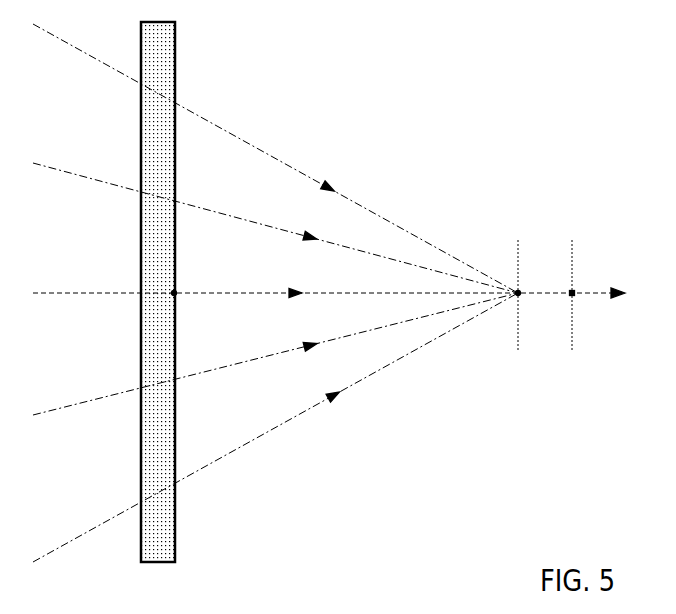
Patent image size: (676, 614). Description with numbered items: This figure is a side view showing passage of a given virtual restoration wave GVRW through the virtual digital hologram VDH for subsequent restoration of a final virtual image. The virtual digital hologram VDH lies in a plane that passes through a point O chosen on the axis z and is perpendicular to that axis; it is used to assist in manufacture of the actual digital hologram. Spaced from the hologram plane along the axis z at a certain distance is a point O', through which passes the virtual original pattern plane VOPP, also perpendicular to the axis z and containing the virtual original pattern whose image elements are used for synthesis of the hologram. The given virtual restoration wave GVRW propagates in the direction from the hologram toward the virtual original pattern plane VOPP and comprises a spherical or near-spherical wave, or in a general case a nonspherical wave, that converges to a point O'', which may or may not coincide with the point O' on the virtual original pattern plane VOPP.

The virtual digital hologram VDH is at (178, 534).
The given virtual restoration wave GVRW is at (303, 165).
The virtual original pattern plane VOPP is at (578, 277).
The point O is at (184, 308).
The point O'' is at (531, 295).
The point O' is at (584, 308).
The axis z is at (331, 306).